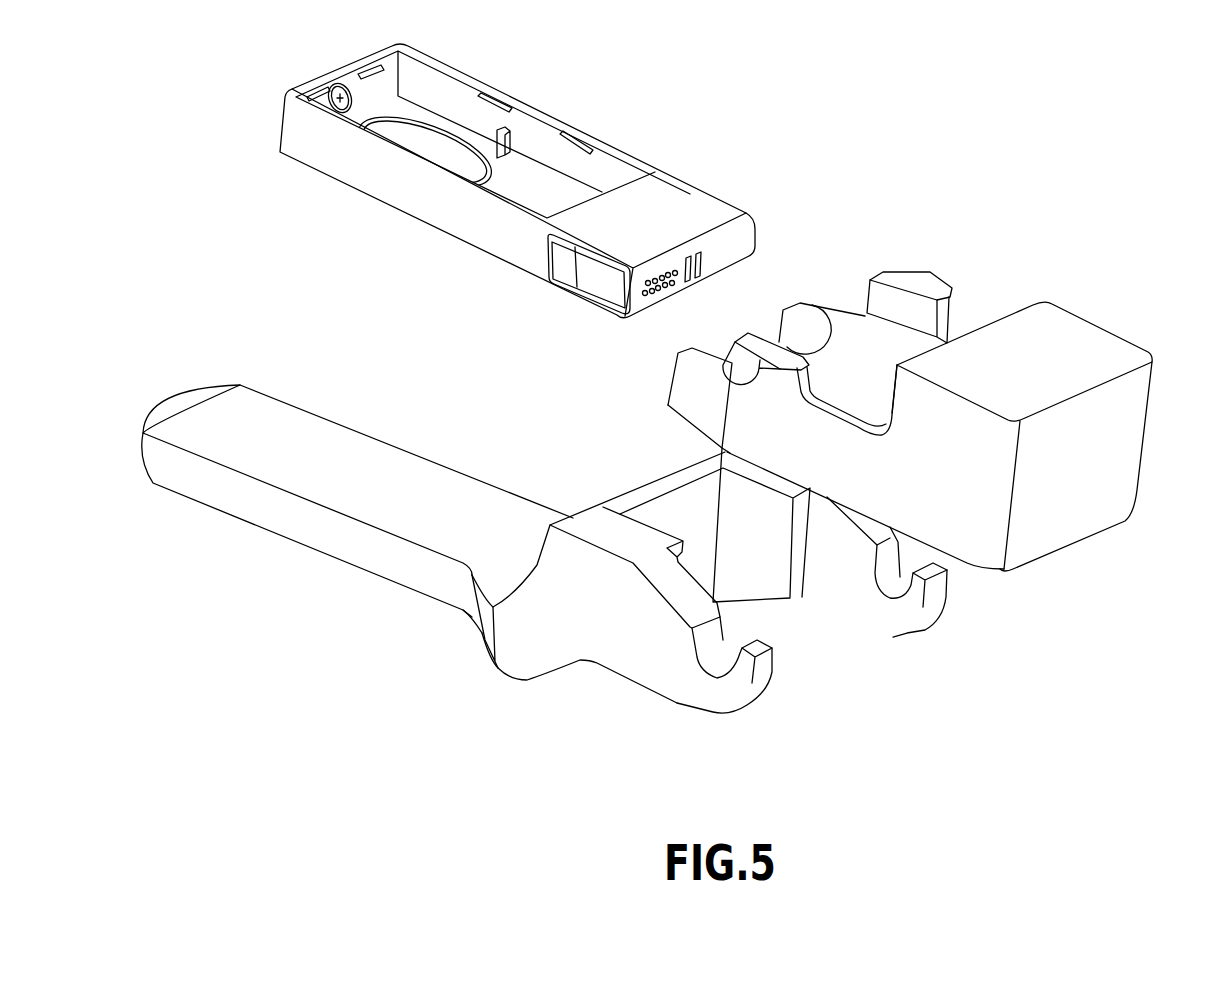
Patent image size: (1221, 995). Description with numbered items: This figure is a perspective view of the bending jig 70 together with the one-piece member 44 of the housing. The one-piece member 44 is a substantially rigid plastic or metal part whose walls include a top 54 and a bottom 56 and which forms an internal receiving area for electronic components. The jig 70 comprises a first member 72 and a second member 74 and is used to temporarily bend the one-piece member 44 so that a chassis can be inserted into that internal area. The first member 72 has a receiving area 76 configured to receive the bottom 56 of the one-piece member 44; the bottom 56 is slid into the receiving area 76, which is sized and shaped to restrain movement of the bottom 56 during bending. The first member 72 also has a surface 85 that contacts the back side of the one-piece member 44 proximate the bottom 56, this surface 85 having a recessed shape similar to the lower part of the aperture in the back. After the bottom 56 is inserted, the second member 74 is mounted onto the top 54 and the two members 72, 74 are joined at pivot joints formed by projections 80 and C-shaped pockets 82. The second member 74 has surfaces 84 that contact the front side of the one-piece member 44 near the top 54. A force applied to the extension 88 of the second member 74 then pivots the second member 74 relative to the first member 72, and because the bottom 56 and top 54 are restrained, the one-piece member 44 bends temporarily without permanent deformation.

The one-piece member 44 is at (592, 98).
The top 54 is at (342, 76).
The bottom 56 is at (711, 252).
The bending jig 70 is at (1120, 248).
The first member 72 is at (1090, 458).
The second member 74 is at (507, 627).
The receiving area 76 is at (963, 316).
The projections 80 is at (927, 280).
The C-shaped pockets 82 is at (712, 662).
The surfaces 84 is at (793, 540).
The surface 85 is at (858, 352).
The extension 88 is at (433, 554).